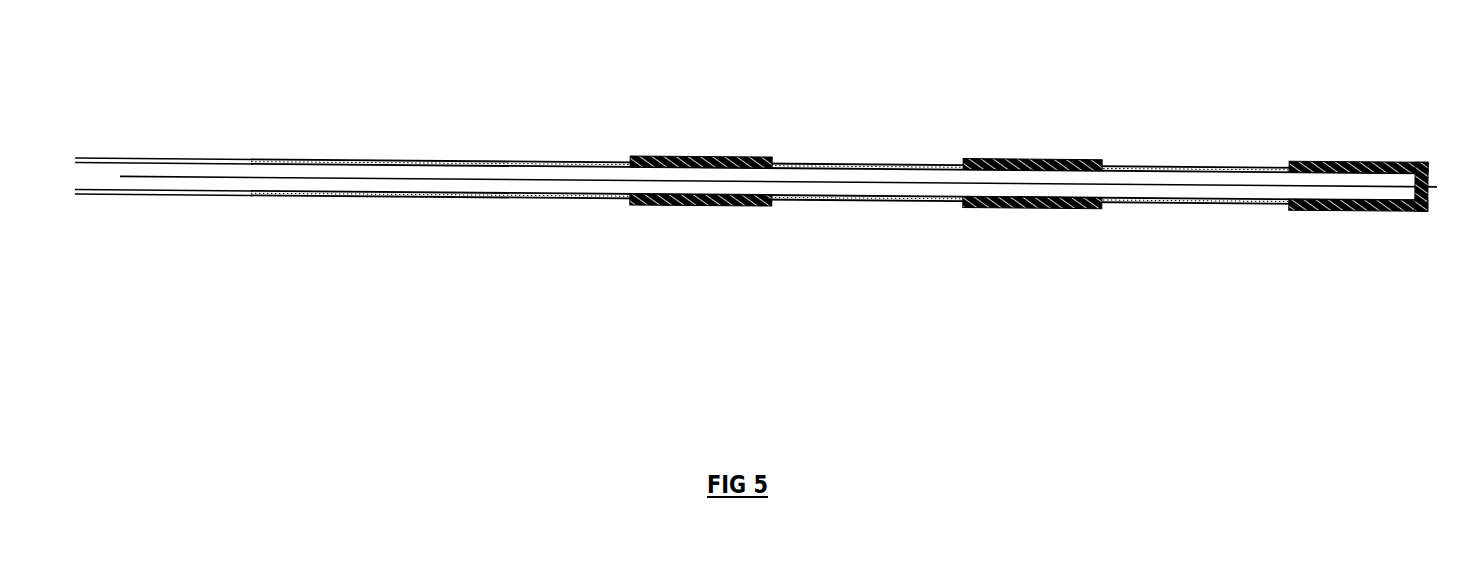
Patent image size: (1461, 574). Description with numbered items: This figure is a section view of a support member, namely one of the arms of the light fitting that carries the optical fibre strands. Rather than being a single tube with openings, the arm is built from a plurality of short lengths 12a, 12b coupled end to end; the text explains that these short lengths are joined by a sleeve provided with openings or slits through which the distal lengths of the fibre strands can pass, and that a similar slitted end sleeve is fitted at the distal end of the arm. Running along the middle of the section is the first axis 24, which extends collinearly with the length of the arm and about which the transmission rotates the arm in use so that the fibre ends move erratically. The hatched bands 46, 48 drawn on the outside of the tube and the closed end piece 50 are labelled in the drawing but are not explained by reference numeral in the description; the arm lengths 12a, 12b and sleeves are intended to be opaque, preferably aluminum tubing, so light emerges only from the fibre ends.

The short arm length 12a is at (241, 239).
The short arm length 12b is at (835, 242).
The first axis 24 is at (778, 115).
The spacer band 46 is at (866, 259).
The electrode band 48 is at (866, 110).
The distal tip cap 50 is at (1306, 118).